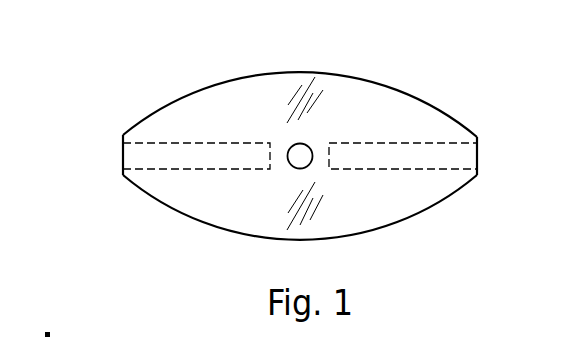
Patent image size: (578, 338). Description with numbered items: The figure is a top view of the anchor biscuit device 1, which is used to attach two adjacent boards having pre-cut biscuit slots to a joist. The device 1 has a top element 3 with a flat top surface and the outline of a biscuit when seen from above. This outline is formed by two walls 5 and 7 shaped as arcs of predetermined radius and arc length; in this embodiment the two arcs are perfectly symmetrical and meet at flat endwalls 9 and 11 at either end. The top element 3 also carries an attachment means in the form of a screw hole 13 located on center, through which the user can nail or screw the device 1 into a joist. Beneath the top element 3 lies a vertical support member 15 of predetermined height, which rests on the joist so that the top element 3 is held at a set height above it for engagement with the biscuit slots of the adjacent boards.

The anchor biscuit device 1 is at (420, 68).
The top element 3 is at (408, 205).
The wall 5 is at (318, 72).
The wall 7 is at (363, 238).
The flat endwall 9 is at (123, 150).
The flat endwall 11 is at (477, 152).
The screw hole 13 is at (290, 146).
The vertical support member 15 is at (193, 170).